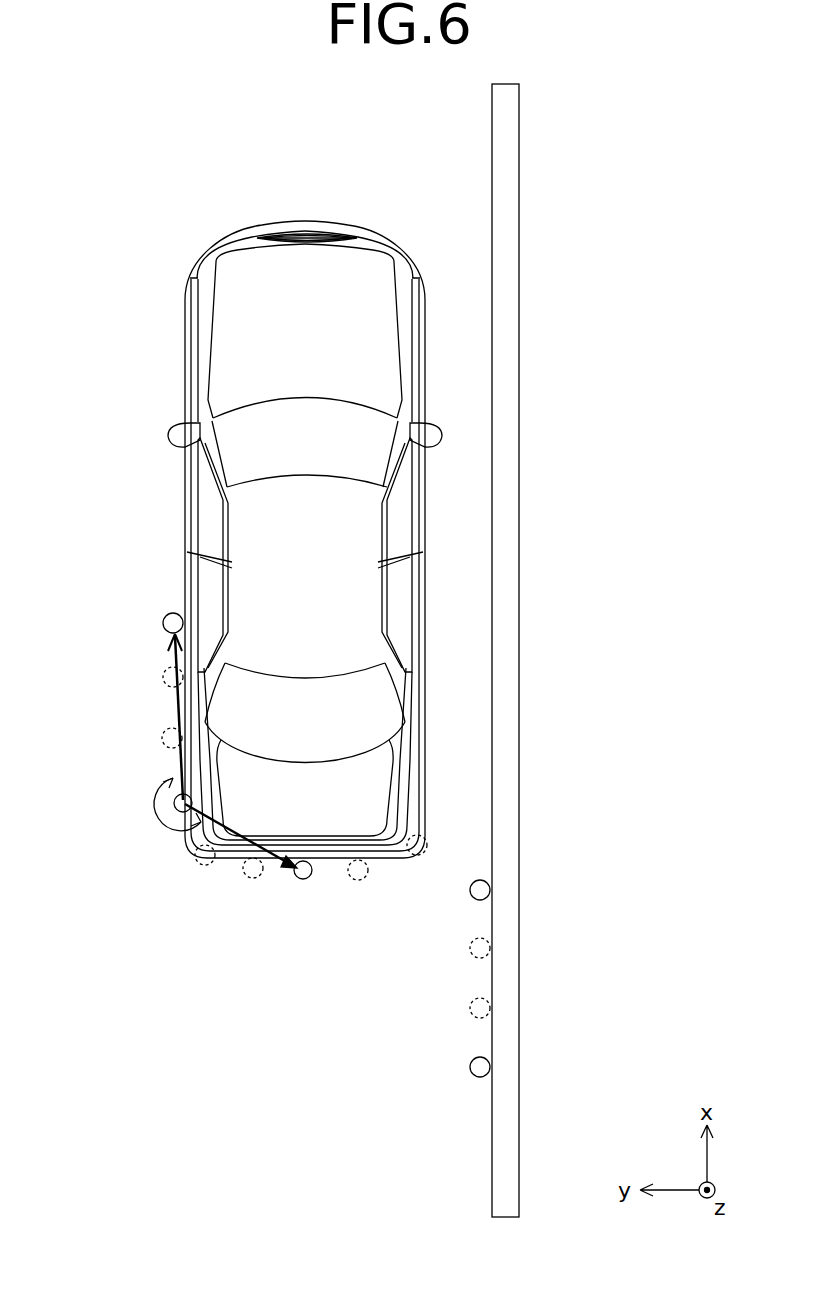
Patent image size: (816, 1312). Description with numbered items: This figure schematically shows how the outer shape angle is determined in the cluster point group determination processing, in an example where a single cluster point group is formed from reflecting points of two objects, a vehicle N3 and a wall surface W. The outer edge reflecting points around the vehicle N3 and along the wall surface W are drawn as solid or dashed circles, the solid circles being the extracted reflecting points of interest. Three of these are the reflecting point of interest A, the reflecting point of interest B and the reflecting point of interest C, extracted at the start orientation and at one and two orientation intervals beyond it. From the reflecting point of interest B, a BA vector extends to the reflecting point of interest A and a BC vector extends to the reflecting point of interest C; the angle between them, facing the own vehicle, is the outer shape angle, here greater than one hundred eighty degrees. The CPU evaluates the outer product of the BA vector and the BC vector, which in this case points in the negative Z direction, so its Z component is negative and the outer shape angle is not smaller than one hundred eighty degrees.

The vehicle N3 is at (305, 255).
The wall surface W is at (519, 245).
The reflecting point of interest A is at (164, 619).
The reflecting point of interest B is at (191, 803).
The reflecting point of interest C is at (301, 881).
The BA vector BA is at (173, 707).
The BC vector BC is at (227, 858).